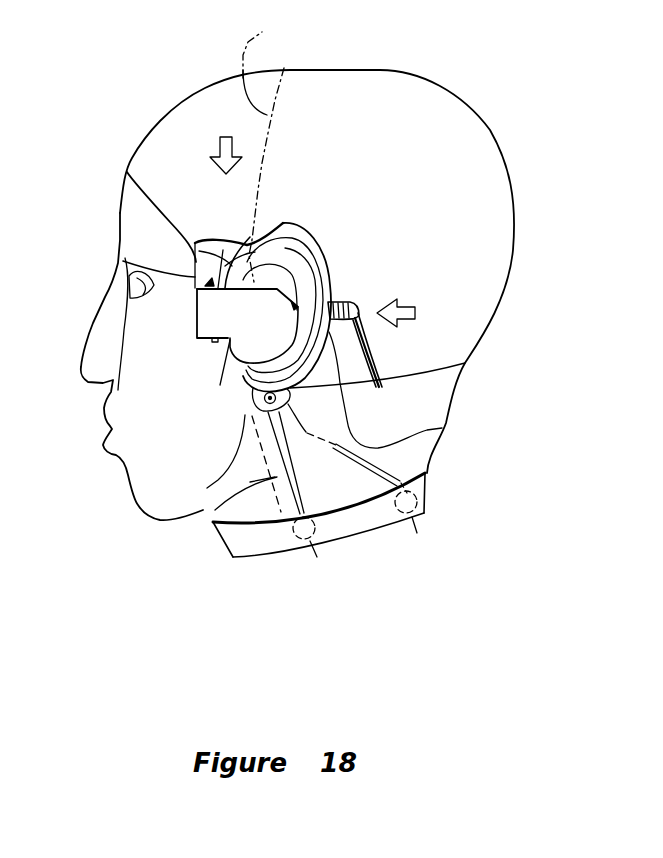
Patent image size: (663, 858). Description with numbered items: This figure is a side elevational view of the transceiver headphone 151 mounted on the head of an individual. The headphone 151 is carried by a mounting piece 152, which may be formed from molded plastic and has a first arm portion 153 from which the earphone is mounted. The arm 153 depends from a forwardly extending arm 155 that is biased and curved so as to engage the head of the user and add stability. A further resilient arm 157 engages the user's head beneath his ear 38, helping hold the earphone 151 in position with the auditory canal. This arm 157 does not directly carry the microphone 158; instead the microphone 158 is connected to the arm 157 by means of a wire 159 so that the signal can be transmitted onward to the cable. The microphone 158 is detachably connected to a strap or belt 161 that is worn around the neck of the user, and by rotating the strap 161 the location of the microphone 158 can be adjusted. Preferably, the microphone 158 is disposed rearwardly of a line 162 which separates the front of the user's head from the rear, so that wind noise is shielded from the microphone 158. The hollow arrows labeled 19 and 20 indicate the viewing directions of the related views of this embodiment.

The section view arrow (FIG. 19) 19 is at (226, 144).
The section view arrow (FIG. 20) 20 is at (413, 312).
The ear 38 is at (293, 257).
The headphone 151 is at (341, 291).
The mounting piece 152 is at (242, 240).
The first arm portion 153 is at (123, 261).
The forwardly extending arm 155 is at (212, 243).
The further resilient arm 157 is at (465, 363).
The microphone 158 is at (322, 572).
The wire 159 is at (215, 510).
The strap or belt 161 is at (275, 547).
The line 162 is at (262, 32).